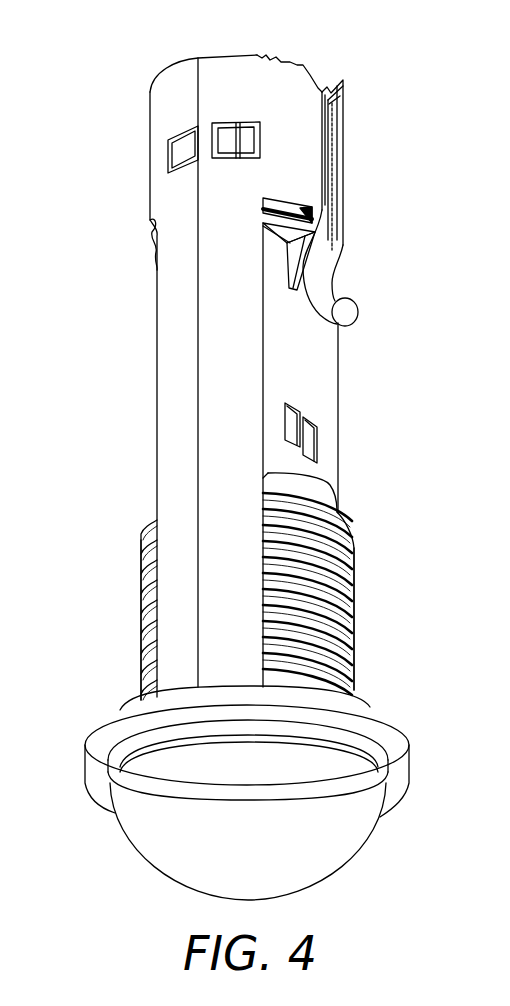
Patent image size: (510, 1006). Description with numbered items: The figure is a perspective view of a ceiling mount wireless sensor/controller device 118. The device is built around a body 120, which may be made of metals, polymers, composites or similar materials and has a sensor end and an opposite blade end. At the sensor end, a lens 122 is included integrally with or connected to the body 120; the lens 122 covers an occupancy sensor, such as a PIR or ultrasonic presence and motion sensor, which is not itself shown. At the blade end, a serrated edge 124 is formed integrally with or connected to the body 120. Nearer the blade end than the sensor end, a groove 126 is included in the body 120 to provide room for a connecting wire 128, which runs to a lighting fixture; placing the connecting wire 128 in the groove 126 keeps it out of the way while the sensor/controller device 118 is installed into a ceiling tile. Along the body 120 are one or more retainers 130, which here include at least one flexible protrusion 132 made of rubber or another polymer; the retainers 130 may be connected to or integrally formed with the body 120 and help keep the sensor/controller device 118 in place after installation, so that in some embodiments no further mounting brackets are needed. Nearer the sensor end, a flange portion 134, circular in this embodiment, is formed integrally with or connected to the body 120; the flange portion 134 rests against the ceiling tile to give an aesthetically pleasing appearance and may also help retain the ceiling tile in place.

The sensor/controller device 118 is at (87, 94).
The body 120 is at (172, 442).
The lens 122 is at (150, 848).
The serrated edge 124 is at (287, 62).
The groove 126 is at (330, 138).
The connecting wire 128 is at (348, 308).
The retainers 130 is at (143, 632).
The flexible protrusion 132 is at (143, 572).
The flange portion 134 is at (400, 743).